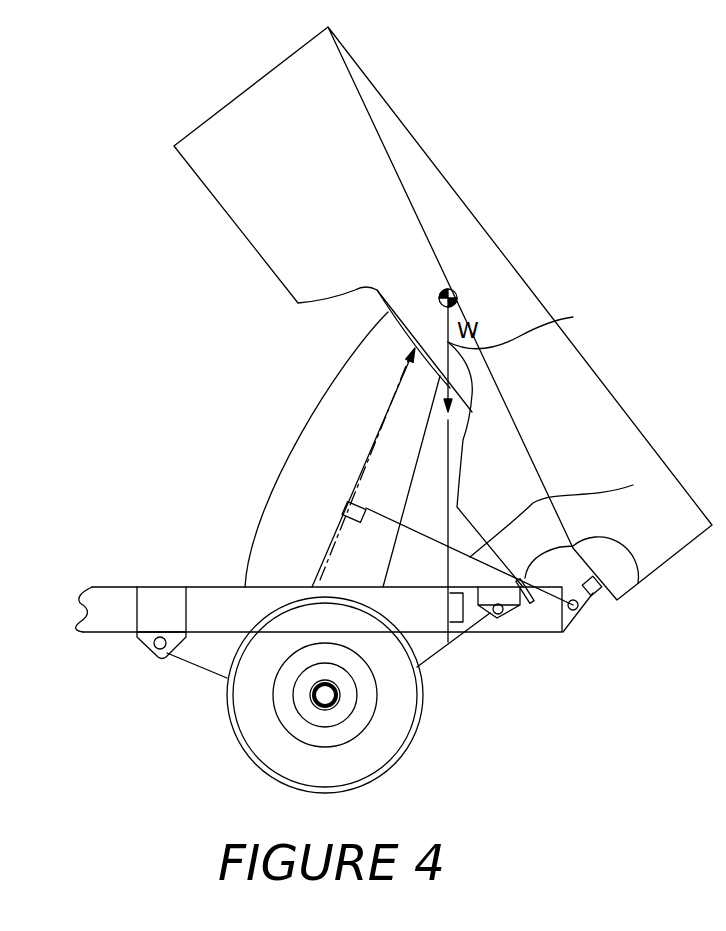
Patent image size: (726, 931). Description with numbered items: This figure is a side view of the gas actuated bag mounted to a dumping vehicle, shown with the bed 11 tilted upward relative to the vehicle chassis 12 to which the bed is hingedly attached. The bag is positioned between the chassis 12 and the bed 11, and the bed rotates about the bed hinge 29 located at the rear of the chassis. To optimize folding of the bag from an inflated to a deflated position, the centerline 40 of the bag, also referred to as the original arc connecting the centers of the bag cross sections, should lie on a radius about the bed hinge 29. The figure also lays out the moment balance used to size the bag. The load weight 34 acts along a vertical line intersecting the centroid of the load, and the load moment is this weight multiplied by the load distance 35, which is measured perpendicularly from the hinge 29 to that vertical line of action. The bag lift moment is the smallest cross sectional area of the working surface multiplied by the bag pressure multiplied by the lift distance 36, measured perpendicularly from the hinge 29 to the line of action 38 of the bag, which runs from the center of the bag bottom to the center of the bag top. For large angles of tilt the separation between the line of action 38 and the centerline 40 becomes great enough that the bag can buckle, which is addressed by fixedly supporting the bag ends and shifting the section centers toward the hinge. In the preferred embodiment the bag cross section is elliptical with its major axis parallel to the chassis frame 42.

The bed 11 is at (458, 190).
The vehicle chassis 12 is at (108, 588).
The bed hinge 29 is at (577, 613).
The load weight 34 is at (573, 317).
The load distance 35 is at (543, 607).
The lift distance 36 is at (633, 485).
The line of action 38 is at (373, 433).
The bag centerline 40 is at (343, 496).
The chassis frame 42 is at (118, 633).